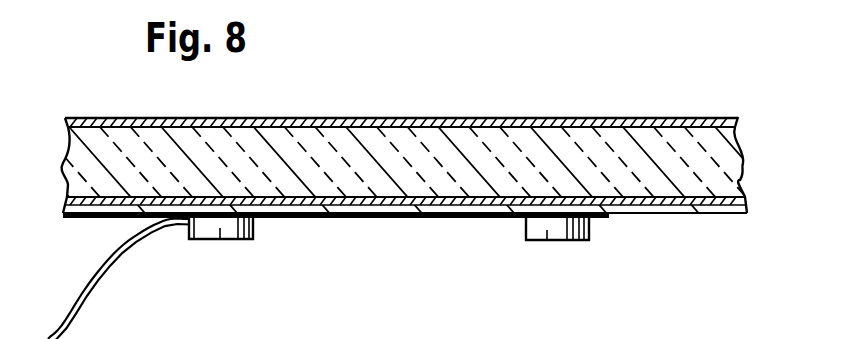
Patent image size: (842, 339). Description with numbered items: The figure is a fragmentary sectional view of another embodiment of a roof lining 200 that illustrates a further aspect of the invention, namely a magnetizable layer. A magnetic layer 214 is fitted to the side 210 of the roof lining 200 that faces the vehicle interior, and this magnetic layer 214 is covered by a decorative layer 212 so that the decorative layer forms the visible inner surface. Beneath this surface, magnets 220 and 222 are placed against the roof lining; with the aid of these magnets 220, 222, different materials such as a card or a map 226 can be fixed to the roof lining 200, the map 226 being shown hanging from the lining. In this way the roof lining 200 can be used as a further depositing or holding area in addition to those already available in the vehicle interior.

The roof lining 200 is at (632, 111).
The side of the roof lining facing the vehicle interior 210 is at (624, 219).
The decorative layer 212 is at (682, 213).
The magnetic layer 214 is at (725, 206).
The magnet 220 is at (225, 241).
The magnet 222 is at (545, 243).
The card or map 226 is at (90, 288).